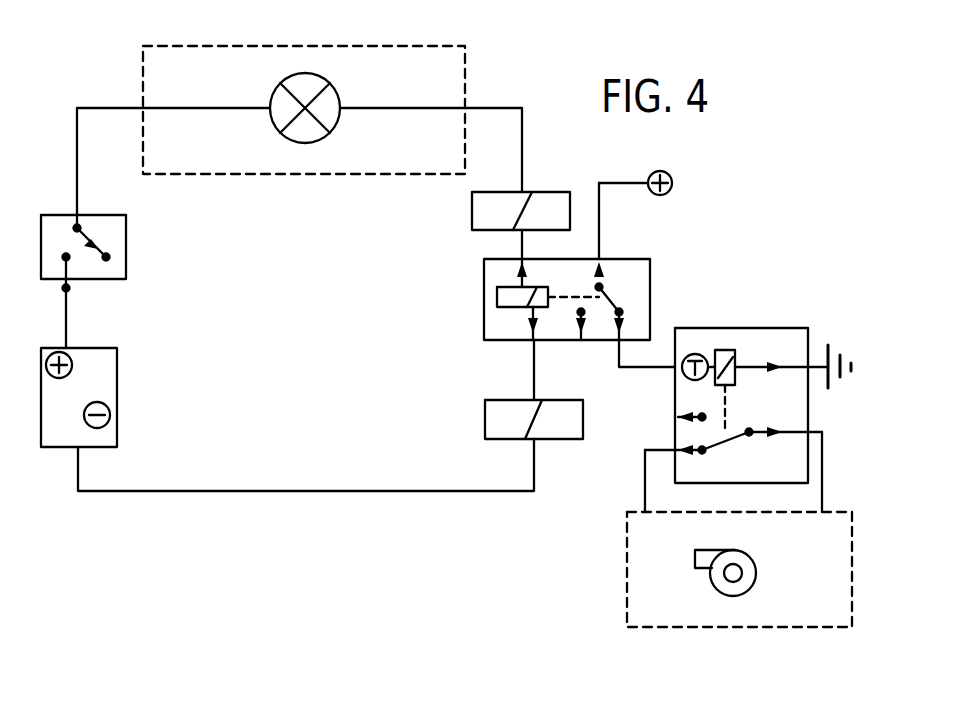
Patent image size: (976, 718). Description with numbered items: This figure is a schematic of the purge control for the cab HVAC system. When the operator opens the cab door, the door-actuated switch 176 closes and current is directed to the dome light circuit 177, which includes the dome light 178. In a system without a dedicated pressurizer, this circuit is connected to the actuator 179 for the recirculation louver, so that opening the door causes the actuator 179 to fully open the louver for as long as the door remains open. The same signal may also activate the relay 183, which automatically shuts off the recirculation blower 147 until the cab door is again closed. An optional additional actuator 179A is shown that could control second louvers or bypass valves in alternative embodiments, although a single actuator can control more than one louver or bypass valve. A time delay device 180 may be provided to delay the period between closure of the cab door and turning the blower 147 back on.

The recirculation blower 147 is at (733, 582).
The door-actuated switch 176 is at (126, 244).
The dome light circuit 177 is at (467, 84).
The dome light 178 is at (305, 143).
The actuator 179 is at (545, 192).
The additional actuator 179A is at (485, 416).
The time delay device 180 is at (740, 328).
The relay 183 is at (484, 294).